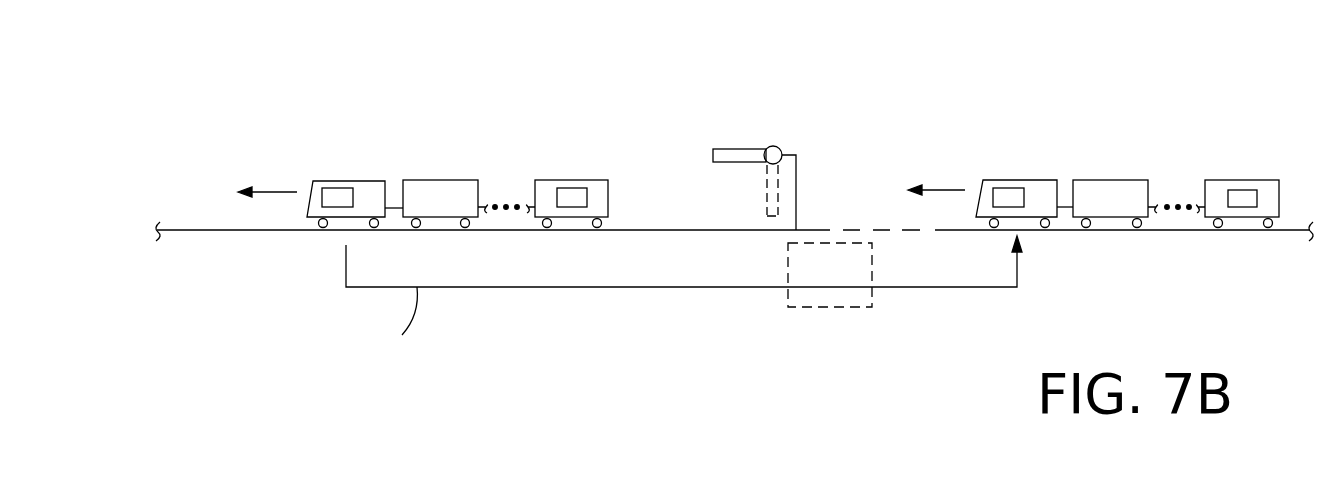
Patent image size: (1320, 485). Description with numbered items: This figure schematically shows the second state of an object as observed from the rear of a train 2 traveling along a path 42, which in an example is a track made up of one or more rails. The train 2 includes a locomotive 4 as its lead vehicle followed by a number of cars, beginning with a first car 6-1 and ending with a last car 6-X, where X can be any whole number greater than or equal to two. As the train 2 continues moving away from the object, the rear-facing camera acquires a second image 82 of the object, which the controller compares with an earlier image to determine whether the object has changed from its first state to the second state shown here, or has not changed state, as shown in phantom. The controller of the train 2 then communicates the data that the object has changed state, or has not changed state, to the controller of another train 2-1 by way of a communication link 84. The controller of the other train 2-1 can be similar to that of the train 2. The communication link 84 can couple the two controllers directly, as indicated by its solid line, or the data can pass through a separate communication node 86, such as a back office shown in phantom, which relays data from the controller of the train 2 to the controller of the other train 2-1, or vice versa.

The train 2 is at (436, 123).
The another train 2-1 is at (1183, 160).
The locomotive 4 is at (357, 180).
The first car 6-1 is at (442, 178).
The last car 6-X is at (564, 178).
The second image 82 is at (624, 185).
The path 42 is at (237, 232).
The communication link 84 is at (550, 287).
The communication node 86 is at (840, 307).